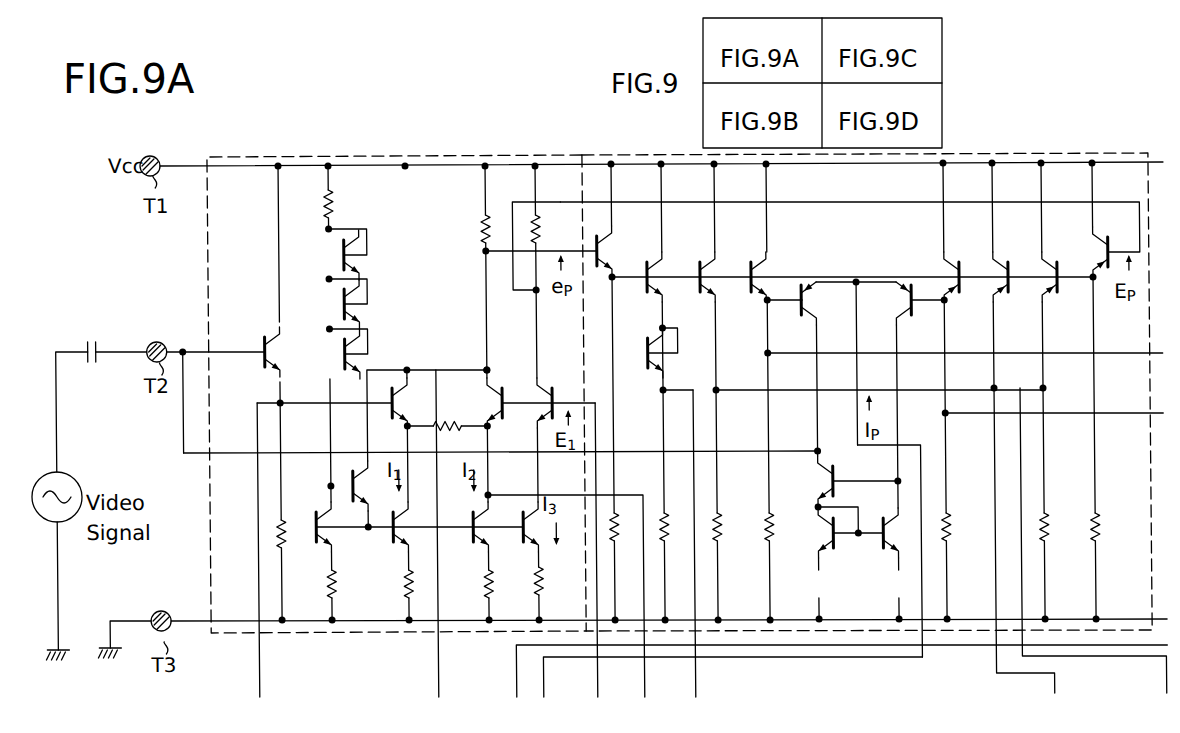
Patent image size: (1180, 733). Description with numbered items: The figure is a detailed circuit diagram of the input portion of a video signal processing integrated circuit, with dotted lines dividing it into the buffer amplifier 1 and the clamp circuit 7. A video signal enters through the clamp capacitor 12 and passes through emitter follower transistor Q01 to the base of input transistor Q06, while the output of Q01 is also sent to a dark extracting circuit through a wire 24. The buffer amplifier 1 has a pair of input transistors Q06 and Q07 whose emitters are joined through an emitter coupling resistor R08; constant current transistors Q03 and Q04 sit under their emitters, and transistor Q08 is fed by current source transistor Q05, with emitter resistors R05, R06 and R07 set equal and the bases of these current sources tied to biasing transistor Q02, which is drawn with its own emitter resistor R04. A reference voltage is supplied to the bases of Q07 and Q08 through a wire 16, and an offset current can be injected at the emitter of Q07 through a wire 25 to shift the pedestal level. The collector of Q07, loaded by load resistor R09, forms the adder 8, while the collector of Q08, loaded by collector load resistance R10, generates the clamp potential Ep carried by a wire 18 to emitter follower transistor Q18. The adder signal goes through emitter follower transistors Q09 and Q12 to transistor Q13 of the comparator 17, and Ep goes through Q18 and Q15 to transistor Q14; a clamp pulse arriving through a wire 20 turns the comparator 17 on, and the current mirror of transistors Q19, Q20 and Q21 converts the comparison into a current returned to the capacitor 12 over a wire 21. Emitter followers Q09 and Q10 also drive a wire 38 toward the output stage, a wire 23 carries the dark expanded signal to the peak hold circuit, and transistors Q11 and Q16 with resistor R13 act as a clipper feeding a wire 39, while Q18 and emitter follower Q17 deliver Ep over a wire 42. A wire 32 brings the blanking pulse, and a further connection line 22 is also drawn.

The buffer amplifier 1 is at (381, 157).
The clamp circuit 7 is at (986, 153).
The adder 8 is at (485, 369).
The clamp capacitor 12 is at (92, 338).
The wire 16 is at (593, 688).
The comparator 17 is at (855, 282).
The wire 18 is at (521, 292).
The wire 20 is at (774, 661).
The wire 21 is at (638, 453).
The connection line 22 is at (434, 677).
The wire 23 is at (840, 353).
The wire 24 is at (256, 675).
The wire 25 is at (640, 688).
The wire 32 is at (1090, 646).
The wire 38 is at (691, 687).
The wire 39 is at (992, 660).
The wire 42 is at (1044, 658).
The emitter follower transistor Q01 is at (263, 338).
The transistor Q02 is at (318, 515).
The constant current transistor Q03 is at (388, 515).
The constant current transistor Q04 is at (475, 545).
The current source transistor Q05 is at (525, 513).
The input transistor Q06 is at (399, 392).
The input transistor Q07 is at (501, 392).
The transistor Q08 is at (555, 395).
The emitter follower transistor Q09 is at (600, 246).
The emitter follower transistor Q10 is at (647, 269).
The transistor Q11 is at (699, 269).
The emitter follower transistor Q12 is at (750, 269).
The transistor Q13 is at (800, 290).
The transistor Q14 is at (910, 290).
The emitter follower transistor Q15 is at (958, 268).
The transistor Q16 is at (1007, 268).
The emitter follower transistor Q17 is at (1056, 268).
The emitter follower transistor Q18 is at (1107, 238).
The transistor Q19 is at (828, 481).
The transistor Q20 is at (829, 540).
The transistor Q21 is at (880, 550).
The resistor R04 is at (334, 585).
The emitter resistor R05 is at (405, 587).
The emitter resistor R06 is at (484, 598).
The emitter resistor R07 is at (533, 587).
The emitter coupling resistor R08 is at (455, 422).
The load resistor R09 is at (485, 225).
The collector load resistance R10 is at (536, 220).
The resistor R13 is at (718, 531).